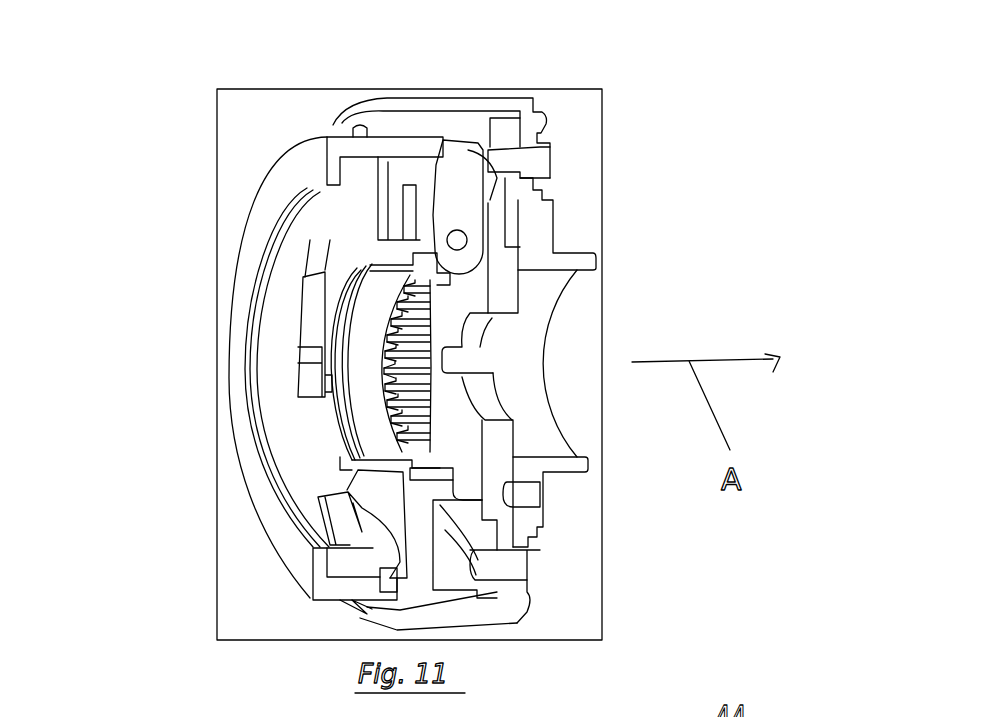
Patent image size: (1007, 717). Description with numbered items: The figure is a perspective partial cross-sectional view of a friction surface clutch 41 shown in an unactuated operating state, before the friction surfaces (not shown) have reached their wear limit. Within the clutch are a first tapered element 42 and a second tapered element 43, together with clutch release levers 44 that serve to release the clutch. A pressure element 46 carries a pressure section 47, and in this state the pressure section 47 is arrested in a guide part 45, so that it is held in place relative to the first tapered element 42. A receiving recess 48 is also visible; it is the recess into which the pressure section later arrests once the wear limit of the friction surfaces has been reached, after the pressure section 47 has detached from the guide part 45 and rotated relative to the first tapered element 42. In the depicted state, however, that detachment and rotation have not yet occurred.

The friction surface clutch 41 is at (690, 139).
The first tapered element 42 is at (400, 122).
The second tapered element 43 is at (520, 110).
The clutch release levers 44 is at (466, 204).
The guide part 45 is at (425, 142).
The pressure element 46 is at (240, 397).
The pressure section 47 is at (332, 440).
The receiving recess 48 is at (373, 543).